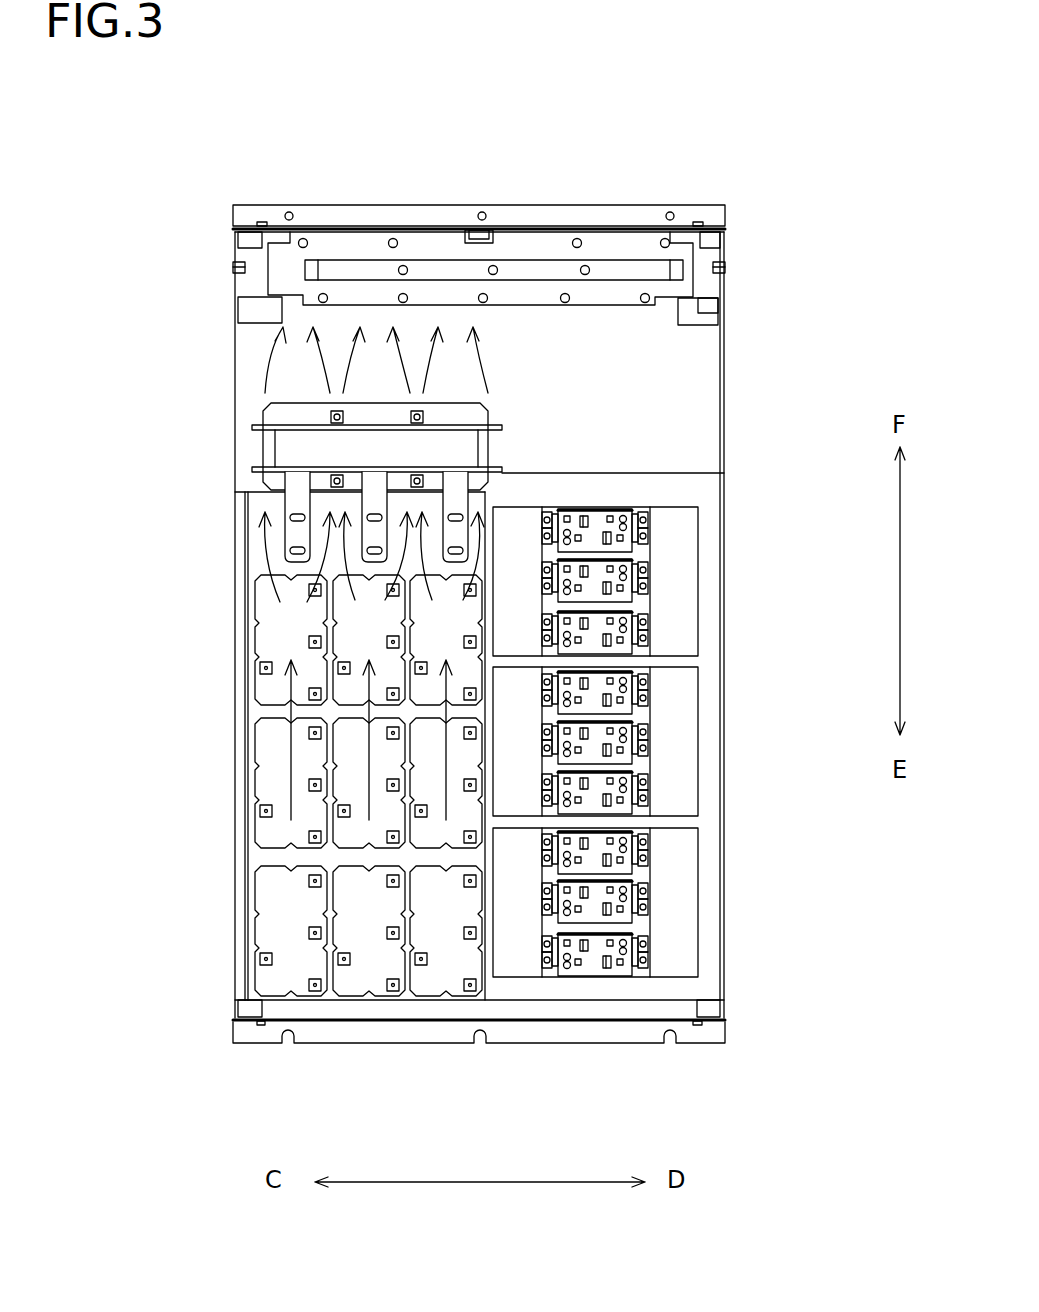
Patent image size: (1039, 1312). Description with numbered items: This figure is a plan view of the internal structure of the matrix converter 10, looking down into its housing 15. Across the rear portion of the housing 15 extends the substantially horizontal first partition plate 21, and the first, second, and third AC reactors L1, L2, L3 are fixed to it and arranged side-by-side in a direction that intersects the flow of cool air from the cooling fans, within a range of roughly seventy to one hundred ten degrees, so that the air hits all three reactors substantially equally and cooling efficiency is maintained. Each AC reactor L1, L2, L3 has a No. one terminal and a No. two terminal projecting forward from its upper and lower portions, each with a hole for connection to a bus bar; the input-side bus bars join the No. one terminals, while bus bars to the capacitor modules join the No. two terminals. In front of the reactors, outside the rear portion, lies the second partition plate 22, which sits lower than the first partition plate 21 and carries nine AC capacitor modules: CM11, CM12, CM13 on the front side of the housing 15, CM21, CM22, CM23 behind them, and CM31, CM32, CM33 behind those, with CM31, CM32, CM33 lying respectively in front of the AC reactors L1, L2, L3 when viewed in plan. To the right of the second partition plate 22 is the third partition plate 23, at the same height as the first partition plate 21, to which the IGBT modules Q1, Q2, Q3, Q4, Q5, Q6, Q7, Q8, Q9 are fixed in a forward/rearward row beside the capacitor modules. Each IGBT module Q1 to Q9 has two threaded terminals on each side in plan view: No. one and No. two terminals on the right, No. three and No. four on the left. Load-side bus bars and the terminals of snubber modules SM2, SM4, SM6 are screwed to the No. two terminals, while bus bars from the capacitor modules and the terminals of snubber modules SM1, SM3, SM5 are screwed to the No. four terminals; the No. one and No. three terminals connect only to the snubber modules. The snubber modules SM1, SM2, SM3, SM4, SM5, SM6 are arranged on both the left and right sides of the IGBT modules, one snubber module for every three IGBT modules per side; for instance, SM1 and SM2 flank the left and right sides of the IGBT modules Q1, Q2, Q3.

The matrix converter 10 is at (162, 137).
The housing 15 is at (725, 340).
The first partition plate 21 is at (692, 402).
The second partition plate 22 is at (257, 713).
The third partition plate 23 is at (713, 952).
The first AC reactor L1 is at (280, 413).
The second AC reactor L2 is at (443, 415).
The third AC reactor L3 is at (367, 415).
The snubber module SM1 is at (513, 960).
The snubber module SM2 is at (685, 843).
The snubber module SM3 is at (512, 800).
The snubber module SM4 is at (685, 688).
The snubber module SM5 is at (514, 523).
The snubber module SM6 is at (685, 537).
The IGBT module Q1 is at (617, 953).
The IGBT module Q2 is at (617, 900).
The IGBT module Q3 is at (617, 851).
The IGBT module Q4 is at (617, 791).
The IGBT module Q5 is at (617, 741).
The IGBT module Q6 is at (617, 691).
The IGBT module Q7 is at (617, 631).
The IGBT module Q8 is at (617, 579).
The IGBT module Q9 is at (617, 529).
The AC capacitor module CM11 is at (275, 982).
The AC capacitor module CM12 is at (353, 982).
The AC capacitor module CM13 is at (430, 982).
The AC capacitor module CM21 is at (285, 840).
The AC capacitor module CM22 is at (358, 789).
The AC capacitor module CM23 is at (432, 762).
The AC capacitor module CM31 is at (273, 687).
The AC capacitor module CM32 is at (353, 625).
The AC capacitor module CM33 is at (427, 610).